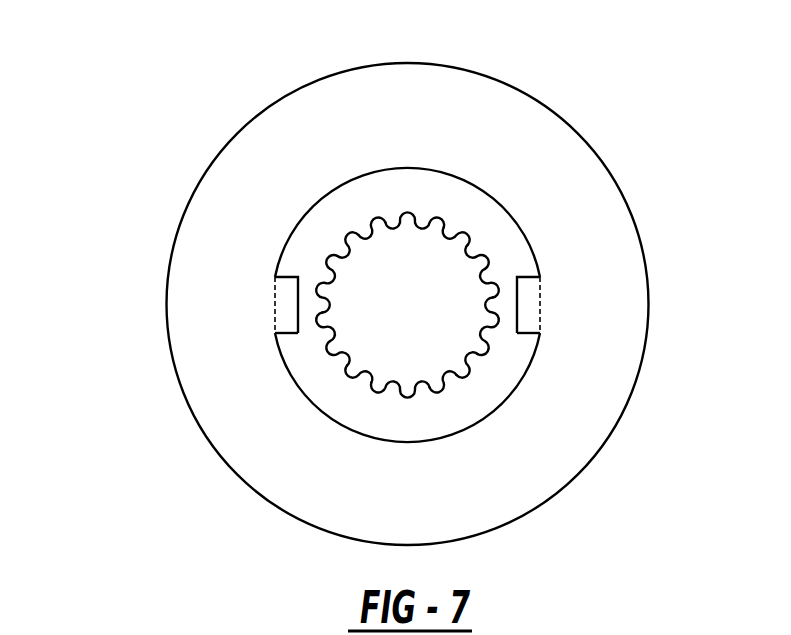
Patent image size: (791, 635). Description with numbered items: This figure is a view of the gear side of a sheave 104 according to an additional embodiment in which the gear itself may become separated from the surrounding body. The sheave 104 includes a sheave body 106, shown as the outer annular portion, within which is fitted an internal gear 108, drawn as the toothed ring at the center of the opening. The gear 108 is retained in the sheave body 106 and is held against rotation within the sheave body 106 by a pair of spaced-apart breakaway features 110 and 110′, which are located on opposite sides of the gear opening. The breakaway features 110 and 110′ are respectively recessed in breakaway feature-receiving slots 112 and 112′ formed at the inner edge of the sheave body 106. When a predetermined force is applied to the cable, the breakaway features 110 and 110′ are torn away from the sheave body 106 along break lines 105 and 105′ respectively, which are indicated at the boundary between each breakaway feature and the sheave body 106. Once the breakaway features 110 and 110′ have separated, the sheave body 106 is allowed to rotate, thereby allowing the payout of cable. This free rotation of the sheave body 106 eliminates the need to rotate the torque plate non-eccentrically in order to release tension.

The sheave 104 is at (203, 110).
The break line 105 is at (272, 290).
The break line 105′ is at (543, 285).
The sheave body 106 is at (204, 313).
The internal gear 108 is at (360, 197).
The breakaway feature 110 is at (283, 313).
The breakaway feature 110′ is at (543, 305).
The breakaway feature-receiving slot 112 is at (281, 330).
The breakaway feature-receiving slot 112′ is at (543, 320).